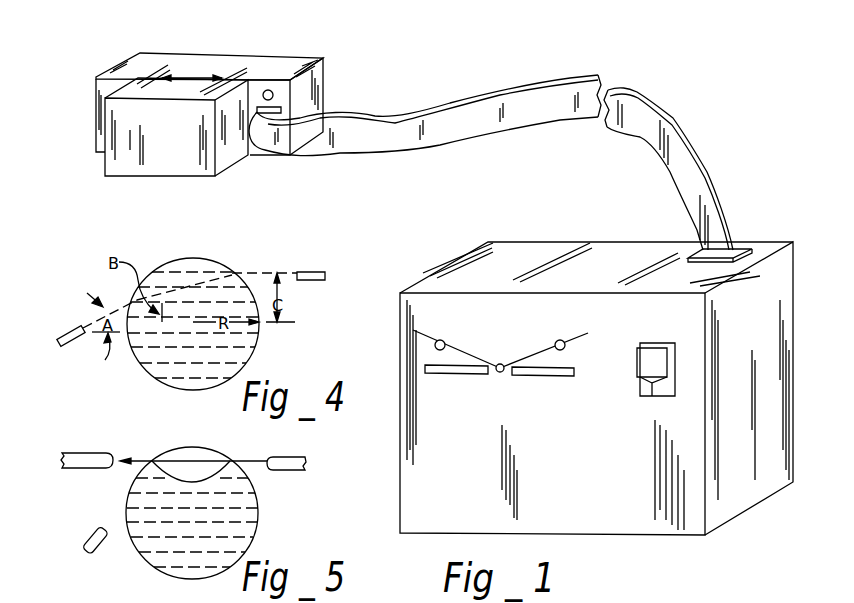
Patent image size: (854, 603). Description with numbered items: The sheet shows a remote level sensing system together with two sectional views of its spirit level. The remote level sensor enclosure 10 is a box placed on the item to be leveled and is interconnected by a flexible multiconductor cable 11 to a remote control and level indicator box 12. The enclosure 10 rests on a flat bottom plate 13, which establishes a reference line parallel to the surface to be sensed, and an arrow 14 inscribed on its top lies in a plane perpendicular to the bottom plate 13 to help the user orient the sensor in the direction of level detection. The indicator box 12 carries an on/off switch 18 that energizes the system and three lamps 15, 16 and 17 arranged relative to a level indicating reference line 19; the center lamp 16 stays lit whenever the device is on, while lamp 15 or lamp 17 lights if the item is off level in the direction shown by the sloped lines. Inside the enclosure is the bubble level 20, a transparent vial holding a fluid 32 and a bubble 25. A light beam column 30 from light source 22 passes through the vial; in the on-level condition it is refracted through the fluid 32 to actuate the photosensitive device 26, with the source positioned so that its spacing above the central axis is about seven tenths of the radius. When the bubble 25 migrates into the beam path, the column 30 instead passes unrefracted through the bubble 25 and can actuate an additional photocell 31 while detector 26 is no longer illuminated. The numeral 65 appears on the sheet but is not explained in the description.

In FIG. 1, the sensing head housing 10 is at (318, 78).
In FIG. 1, the cable 11 is at (487, 96).
In FIG. 1, the control unit housing 12 is at (588, 247).
In FIG. 1, the front block of sensing head 13 is at (225, 174).
In FIG. 1, the direction arrow 14 is at (200, 78).
In FIG. 1, the indicator lamp 15 is at (443, 340).
In FIG. 1, the pivot 16 is at (499, 373).
In FIG. 1, the indicator lamp 17 is at (557, 340).
In FIG. 1, the on-off switch 18 is at (632, 380).
In FIG. 1, the indicator bar 19 is at (456, 375).
In FIG. 4, the pipe 20 is at (255, 363).
In FIG. 5, the pipe 20 is at (258, 527).
In FIG. 4, the detector 22 is at (315, 272).
In FIG. 5, the detector 22 is at (290, 470).
In FIG. 5, the liquid meniscus 25 is at (175, 452).
In FIG. 4, the light source 26 is at (77, 343).
In FIG. 5, the light source 26 is at (88, 537).
In FIG. 4, the light beam 30 is at (258, 272).
In FIG. 5, the light beam 30 is at (257, 437).
In FIG. 5, the detector 31 is at (82, 453).
In FIG. 4, the liquid 32 is at (212, 364).
In FIG. 5, the liquid 32 is at (153, 510).
In FIG. 1, the element 65 is at (644, 602).